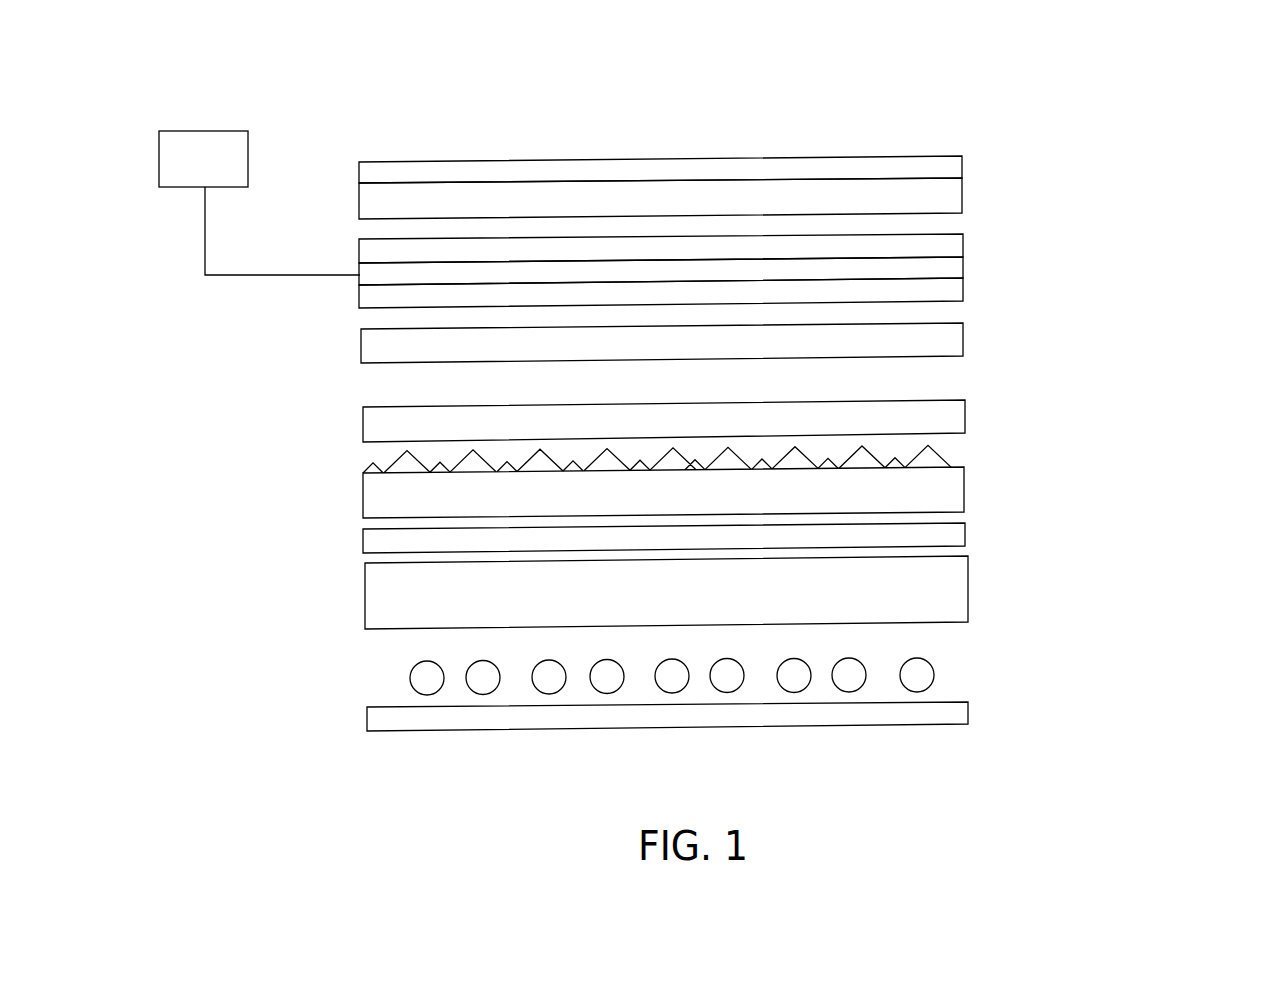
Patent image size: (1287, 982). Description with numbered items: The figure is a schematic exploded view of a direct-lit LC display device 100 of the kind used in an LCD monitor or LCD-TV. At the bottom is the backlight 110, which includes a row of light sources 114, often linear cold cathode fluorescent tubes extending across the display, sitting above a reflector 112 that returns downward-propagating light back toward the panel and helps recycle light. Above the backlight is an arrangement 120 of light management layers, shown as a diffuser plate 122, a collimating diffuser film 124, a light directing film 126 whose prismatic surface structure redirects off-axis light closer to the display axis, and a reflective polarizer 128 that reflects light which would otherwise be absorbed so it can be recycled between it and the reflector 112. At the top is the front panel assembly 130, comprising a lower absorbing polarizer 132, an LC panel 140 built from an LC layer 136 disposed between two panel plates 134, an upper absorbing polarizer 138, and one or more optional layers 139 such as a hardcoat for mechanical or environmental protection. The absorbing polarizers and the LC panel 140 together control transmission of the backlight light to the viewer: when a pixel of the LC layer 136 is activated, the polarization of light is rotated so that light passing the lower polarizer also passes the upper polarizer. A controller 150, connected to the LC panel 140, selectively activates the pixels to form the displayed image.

The direct-lit LC display device 100 is at (940, 95).
The backlight 110 is at (711, 702).
The reflector 112 is at (378, 719).
The light sources 114 is at (410, 673).
The arrangement of light management layers 120 is at (725, 514).
The diffuser plate 122 is at (376, 597).
The collimating diffuser film 124 is at (363, 540).
The light directing film 126 is at (363, 497).
The reflective polarizer 128 is at (363, 419).
The front panel assembly 130 is at (751, 259).
The lower absorbing polarizer 132 is at (370, 340).
The panel plates 134 is at (370, 240).
The LC layer 136 is at (382, 275).
The upper absorbing polarizer 138 is at (370, 197).
The optional layer 139 is at (370, 173).
The LC panel 140 is at (677, 273).
The controller 150 is at (203, 130).